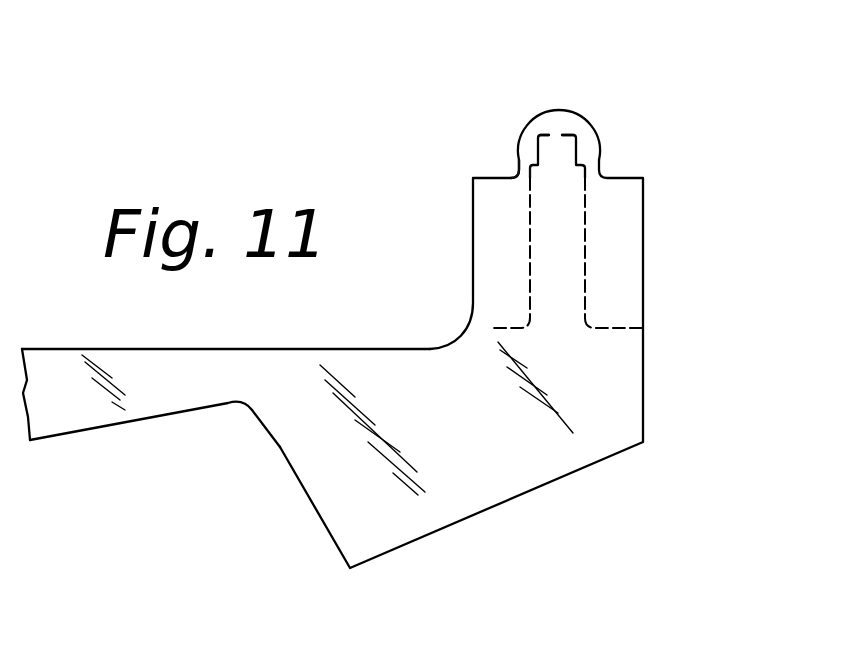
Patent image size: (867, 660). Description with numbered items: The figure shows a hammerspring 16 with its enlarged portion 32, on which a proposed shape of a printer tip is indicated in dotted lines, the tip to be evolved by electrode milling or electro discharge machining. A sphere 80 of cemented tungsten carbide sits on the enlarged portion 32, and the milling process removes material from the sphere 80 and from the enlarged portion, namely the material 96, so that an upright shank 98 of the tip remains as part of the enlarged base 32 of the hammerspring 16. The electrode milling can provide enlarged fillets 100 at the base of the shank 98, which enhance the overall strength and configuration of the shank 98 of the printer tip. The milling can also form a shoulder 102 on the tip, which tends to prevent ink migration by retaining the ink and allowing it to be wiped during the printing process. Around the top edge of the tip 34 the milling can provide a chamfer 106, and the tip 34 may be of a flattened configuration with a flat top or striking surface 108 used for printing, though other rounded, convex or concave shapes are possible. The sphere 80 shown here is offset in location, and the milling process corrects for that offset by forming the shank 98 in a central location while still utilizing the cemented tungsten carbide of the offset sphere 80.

The hammerspring 16 is at (160, 407).
The enlarged portion 32 is at (502, 478).
The tip 34 is at (518, 148).
The sphere 80 is at (583, 123).
The material 96 is at (613, 297).
The shank 98 is at (563, 248).
The enlarged fillets 100 is at (592, 322).
The shoulder 102 is at (598, 145).
The chamfer 106 is at (519, 140).
The striking surface 108 is at (550, 135).